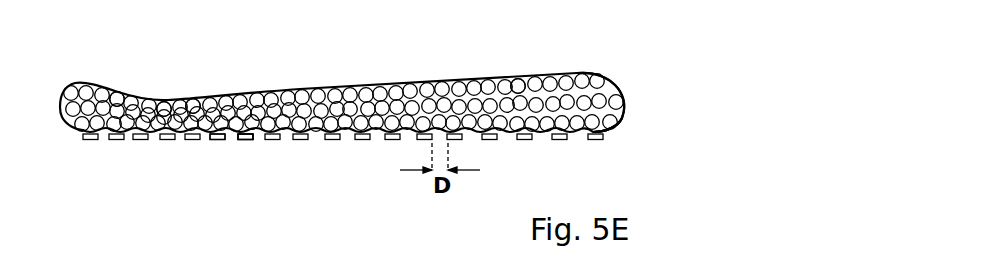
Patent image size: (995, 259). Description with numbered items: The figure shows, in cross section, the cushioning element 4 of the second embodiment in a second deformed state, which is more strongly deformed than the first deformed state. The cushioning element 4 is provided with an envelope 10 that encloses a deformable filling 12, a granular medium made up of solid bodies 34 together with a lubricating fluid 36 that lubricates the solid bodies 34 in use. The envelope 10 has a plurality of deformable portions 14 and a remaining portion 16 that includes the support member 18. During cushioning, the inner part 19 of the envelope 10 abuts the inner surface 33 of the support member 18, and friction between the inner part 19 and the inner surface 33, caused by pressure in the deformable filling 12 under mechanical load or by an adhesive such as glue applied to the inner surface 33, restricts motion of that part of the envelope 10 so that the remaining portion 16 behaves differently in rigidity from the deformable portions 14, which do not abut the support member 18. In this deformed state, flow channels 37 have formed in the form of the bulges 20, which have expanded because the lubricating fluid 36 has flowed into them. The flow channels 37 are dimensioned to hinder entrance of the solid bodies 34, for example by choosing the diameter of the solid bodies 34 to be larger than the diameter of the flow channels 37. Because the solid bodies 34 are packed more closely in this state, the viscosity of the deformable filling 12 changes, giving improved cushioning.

The cushioning element 4 is at (628, 65).
The envelope 10 is at (619, 123).
The deformable filling 12 is at (115, 97).
The deformable portions 14 is at (213, 140).
The remaining portion 16 is at (390, 140).
The support member 18 is at (524, 140).
The inner part 19 is at (647, 144).
The bulges 20 is at (233, 140).
The inner surface 33 is at (166, 104).
The solid bodies 34 is at (199, 104).
The lubricating fluid 36 is at (270, 96).
The flow channels 37 is at (254, 140).